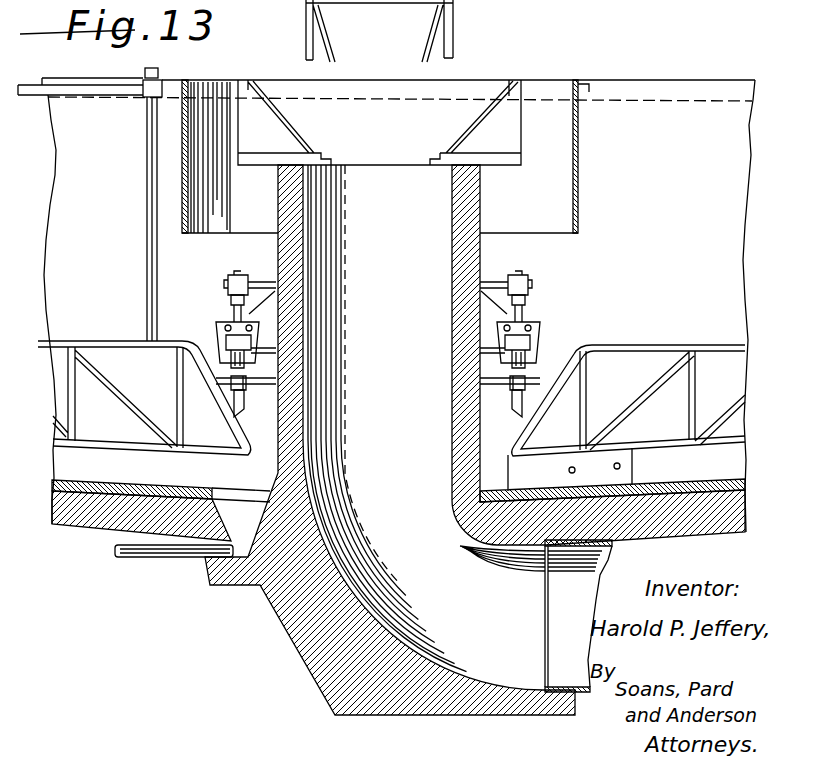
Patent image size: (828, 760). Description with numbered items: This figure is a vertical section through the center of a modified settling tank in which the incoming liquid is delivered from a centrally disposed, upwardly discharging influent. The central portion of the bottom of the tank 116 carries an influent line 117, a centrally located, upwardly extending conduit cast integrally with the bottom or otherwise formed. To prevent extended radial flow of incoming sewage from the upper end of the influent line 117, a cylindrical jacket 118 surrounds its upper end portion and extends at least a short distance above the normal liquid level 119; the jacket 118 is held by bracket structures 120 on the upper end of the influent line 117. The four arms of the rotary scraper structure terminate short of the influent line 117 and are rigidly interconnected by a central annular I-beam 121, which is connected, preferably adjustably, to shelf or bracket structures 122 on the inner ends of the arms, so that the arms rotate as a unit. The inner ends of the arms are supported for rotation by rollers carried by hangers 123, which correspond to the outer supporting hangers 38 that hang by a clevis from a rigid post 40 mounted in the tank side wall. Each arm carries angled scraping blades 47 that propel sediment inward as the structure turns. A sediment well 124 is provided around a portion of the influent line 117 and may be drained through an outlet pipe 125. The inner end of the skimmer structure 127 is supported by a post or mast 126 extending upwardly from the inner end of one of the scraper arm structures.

The hanger 38 is at (530, 283).
The post 40 is at (494, 284).
The scraping blade 47 is at (636, 483).
The central portion of the bottom of the tank 116 is at (90, 527).
The influent line 117 is at (481, 251).
The jacket 118 is at (579, 174).
The normal liquid level 119 is at (652, 100).
The bracket structure 120 is at (282, 134).
The annular I-beam 121 is at (526, 380).
The shelf or bracket structure 122 is at (525, 398).
The hanger 123 is at (536, 326).
The sediment well 124 is at (233, 525).
The outlet pipe 125 is at (142, 553).
The mast 126 is at (147, 218).
The skimmer structure 127 is at (95, 86).